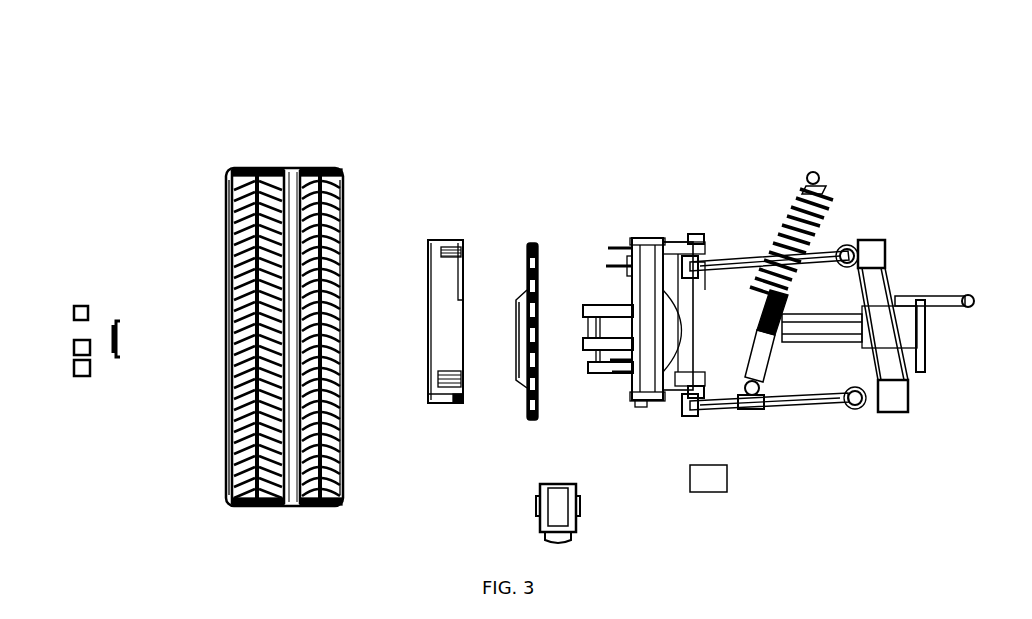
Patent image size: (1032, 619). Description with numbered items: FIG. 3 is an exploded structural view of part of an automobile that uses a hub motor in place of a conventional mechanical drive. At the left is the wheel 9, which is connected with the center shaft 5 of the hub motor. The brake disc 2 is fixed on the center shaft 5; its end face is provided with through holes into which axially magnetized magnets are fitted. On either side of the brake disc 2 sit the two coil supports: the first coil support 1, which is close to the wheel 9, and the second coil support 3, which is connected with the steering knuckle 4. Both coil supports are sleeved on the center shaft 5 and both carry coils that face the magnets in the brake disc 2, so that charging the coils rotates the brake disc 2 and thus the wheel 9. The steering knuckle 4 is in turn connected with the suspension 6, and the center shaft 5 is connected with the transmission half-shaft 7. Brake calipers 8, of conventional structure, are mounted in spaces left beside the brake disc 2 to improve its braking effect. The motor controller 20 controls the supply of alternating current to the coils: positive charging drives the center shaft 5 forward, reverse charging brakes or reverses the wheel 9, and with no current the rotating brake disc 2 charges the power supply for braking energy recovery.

The first coil support 1 is at (434, 240).
The brake disc 2 is at (533, 243).
The second coil support 3 is at (646, 238).
The steering knuckle 4 is at (672, 242).
The center shaft 5 is at (612, 335).
The suspension 6 is at (870, 242).
The transmission half-shaft 7 is at (825, 340).
The brake calipers 8 is at (539, 515).
The wheel 9 is at (263, 176).
The motor controller 20 is at (716, 492).